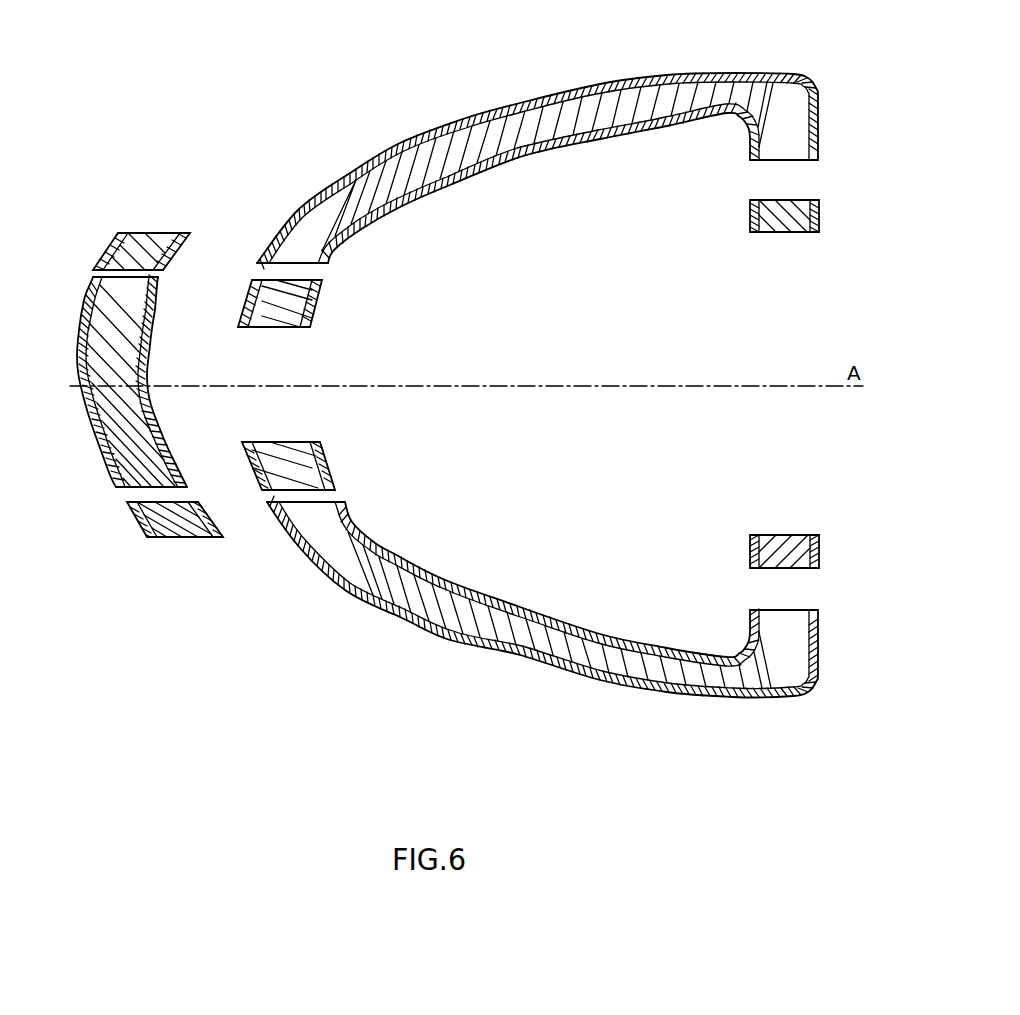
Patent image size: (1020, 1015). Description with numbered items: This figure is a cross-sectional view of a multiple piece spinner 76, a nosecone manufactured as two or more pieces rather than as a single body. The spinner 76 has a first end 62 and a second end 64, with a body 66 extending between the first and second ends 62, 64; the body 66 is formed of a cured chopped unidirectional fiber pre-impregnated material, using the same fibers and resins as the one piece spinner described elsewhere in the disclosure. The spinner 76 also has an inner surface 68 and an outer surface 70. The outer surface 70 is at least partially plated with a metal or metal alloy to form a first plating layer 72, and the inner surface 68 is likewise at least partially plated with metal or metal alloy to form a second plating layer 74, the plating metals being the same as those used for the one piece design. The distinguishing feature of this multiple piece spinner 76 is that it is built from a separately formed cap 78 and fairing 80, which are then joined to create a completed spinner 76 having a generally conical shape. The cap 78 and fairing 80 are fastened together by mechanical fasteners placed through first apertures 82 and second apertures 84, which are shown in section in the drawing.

The first end 62 is at (87, 430).
The second end 64 is at (822, 102).
The body 66 is at (145, 442).
The inner surface 68 is at (145, 242).
The outer surface 70 is at (147, 513).
The first plating layer 72 is at (78, 352).
The second plating layer 74 is at (152, 342).
The multiple piece spinner 76 is at (228, 165).
The cap 78 is at (97, 240).
The fairing 80 is at (528, 80).
The first apertures 82 is at (153, 273).
The second apertures 84 is at (307, 273).